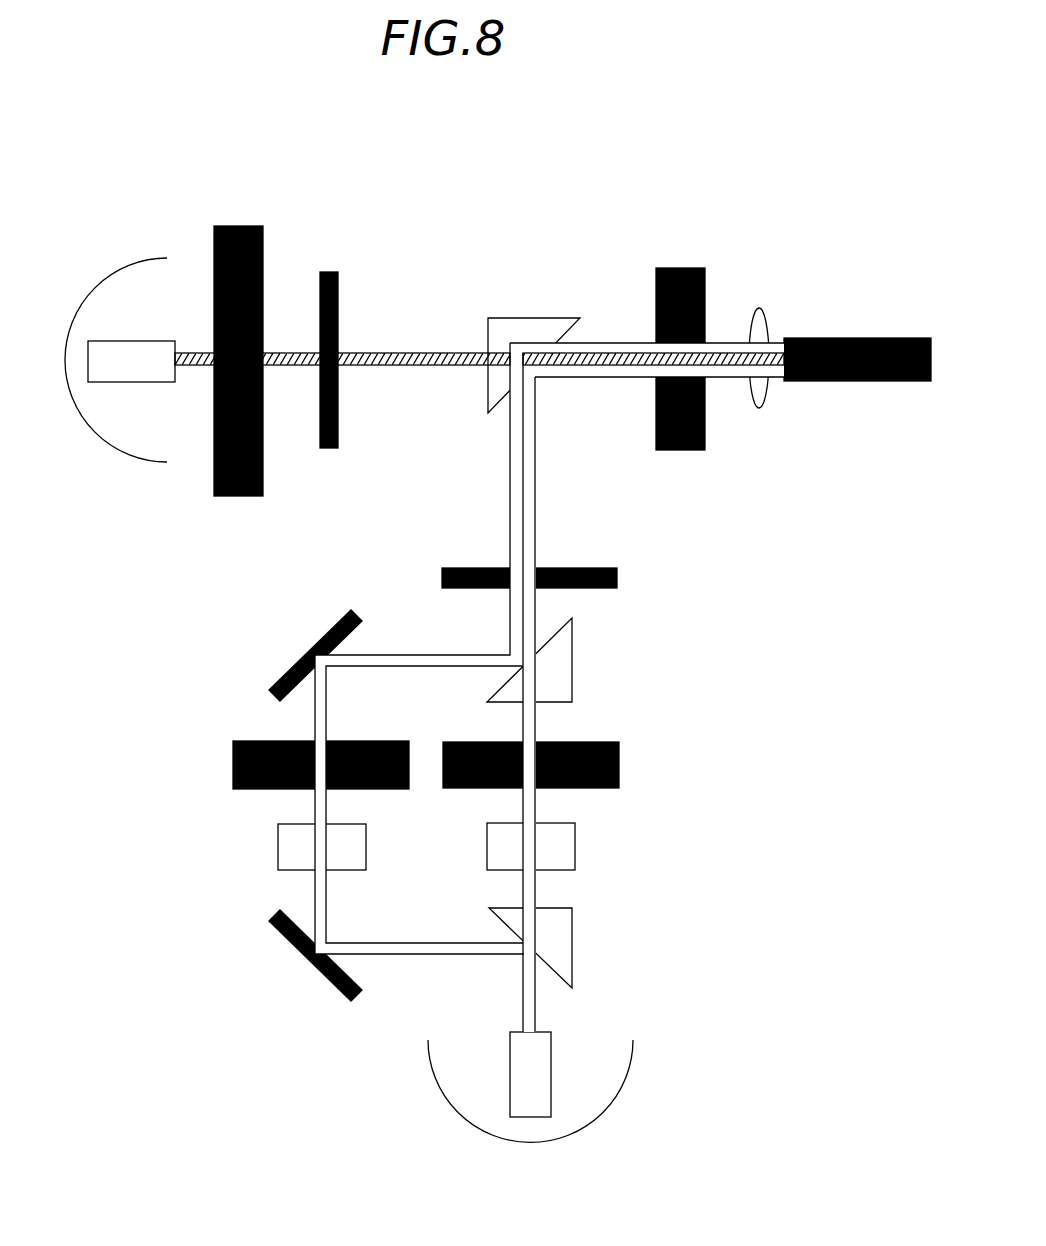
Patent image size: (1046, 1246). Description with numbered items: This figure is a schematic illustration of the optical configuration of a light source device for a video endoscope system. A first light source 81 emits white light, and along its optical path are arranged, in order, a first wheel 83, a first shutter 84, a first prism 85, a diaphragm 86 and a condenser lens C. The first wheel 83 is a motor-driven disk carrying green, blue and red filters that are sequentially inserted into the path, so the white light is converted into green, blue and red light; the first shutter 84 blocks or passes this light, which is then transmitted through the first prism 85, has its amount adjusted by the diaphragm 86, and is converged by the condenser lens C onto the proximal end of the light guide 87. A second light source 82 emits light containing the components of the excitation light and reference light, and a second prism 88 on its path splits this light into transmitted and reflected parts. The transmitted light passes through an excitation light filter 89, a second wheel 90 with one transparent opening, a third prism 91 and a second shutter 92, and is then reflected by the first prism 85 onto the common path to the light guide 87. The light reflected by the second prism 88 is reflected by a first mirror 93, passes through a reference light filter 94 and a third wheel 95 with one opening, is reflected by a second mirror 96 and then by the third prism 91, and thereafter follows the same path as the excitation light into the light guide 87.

The first light source 81 is at (106, 445).
The second light source 82 is at (570, 1135).
The first wheel 83 is at (240, 226).
The first shutter 84 is at (327, 272).
The first prism 85 is at (538, 318).
The diaphragm 86 is at (683, 268).
The light guide 87 is at (858, 338).
The second prism 88 is at (572, 945).
The excitation light filter 89 is at (575, 845).
The second wheel 90 is at (619, 765).
The third prism 91 is at (572, 665).
The second shutter 92 is at (617, 578).
The first mirror 93 is at (290, 938).
The reference light filter 94 is at (278, 838).
The third wheel 95 is at (232, 765).
The second mirror 96 is at (293, 662).
The condenser lens C is at (759, 308).